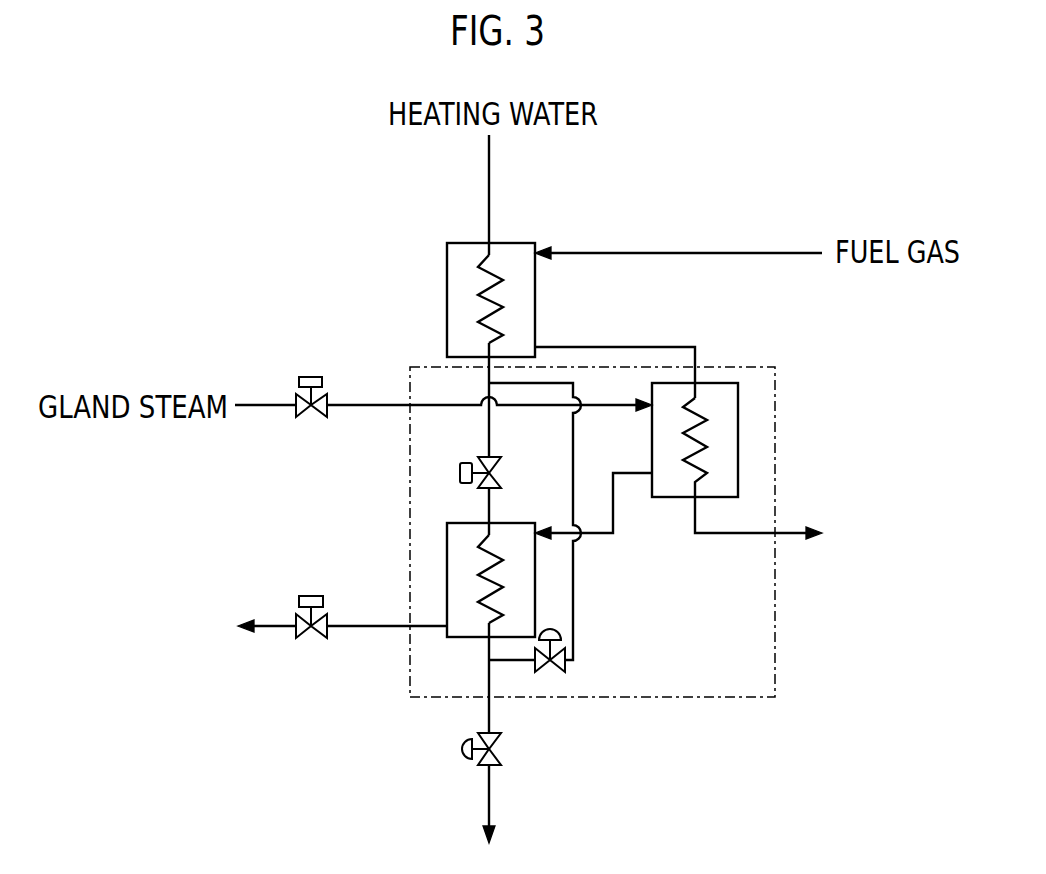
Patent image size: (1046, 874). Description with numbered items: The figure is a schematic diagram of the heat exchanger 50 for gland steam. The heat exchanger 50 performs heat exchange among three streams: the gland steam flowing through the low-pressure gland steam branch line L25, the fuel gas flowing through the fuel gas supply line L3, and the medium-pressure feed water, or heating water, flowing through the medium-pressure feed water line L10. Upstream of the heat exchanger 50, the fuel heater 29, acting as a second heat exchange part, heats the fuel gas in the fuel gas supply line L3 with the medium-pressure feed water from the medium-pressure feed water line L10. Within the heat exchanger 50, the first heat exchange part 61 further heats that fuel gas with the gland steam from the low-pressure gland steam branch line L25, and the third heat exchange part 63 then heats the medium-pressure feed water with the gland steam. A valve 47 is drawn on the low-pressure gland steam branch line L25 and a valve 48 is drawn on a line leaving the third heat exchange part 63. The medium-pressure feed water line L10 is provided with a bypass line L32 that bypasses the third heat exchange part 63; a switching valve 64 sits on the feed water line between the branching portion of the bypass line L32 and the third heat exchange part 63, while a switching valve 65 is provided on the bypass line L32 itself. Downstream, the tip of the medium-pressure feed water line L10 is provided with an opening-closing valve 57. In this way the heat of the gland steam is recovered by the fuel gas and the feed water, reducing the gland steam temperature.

The medium-pressure feed water line L10 is at (490, 160).
The fuel heater 29 is at (447, 300).
The fuel gas supply line L3 is at (812, 256).
The heat exchanger 50 is at (728, 368).
The first heat exchange part 61 is at (738, 437).
The low-pressure gland steam branch line L25 is at (255, 403).
The gland steam valve 47 is at (305, 420).
The bypass line L32 is at (575, 570).
The switching valve 64 is at (478, 490).
The third heat exchange part 63 is at (535, 608).
The drain valve 48 is at (305, 640).
The switching valve 65 is at (556, 675).
The opening-closing valve 57 is at (500, 757).